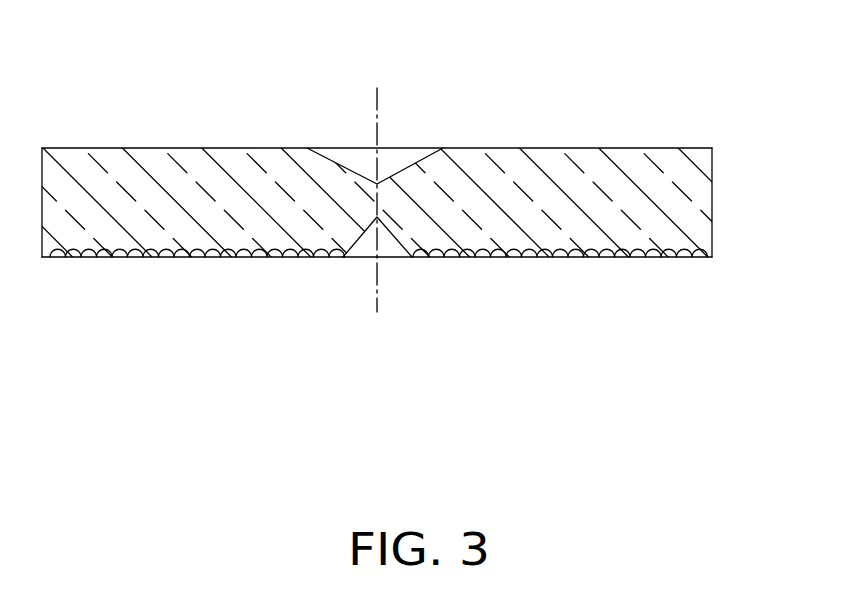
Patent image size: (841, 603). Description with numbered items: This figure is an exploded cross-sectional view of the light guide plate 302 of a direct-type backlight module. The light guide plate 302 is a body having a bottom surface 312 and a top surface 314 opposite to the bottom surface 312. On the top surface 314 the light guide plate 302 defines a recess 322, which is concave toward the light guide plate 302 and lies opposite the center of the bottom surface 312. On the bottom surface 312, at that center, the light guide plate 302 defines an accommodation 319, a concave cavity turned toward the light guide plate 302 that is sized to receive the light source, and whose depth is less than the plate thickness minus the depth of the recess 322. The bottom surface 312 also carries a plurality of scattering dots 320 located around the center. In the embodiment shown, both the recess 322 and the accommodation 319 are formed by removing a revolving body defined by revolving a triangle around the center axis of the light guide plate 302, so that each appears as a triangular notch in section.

The light guide plate 302 is at (767, 35).
The top surface 314 is at (627, 142).
The scattering dots 320 is at (710, 258).
The bottom surface 312 is at (600, 252).
The recess 322 is at (392, 165).
The accommodation 319 is at (392, 257).